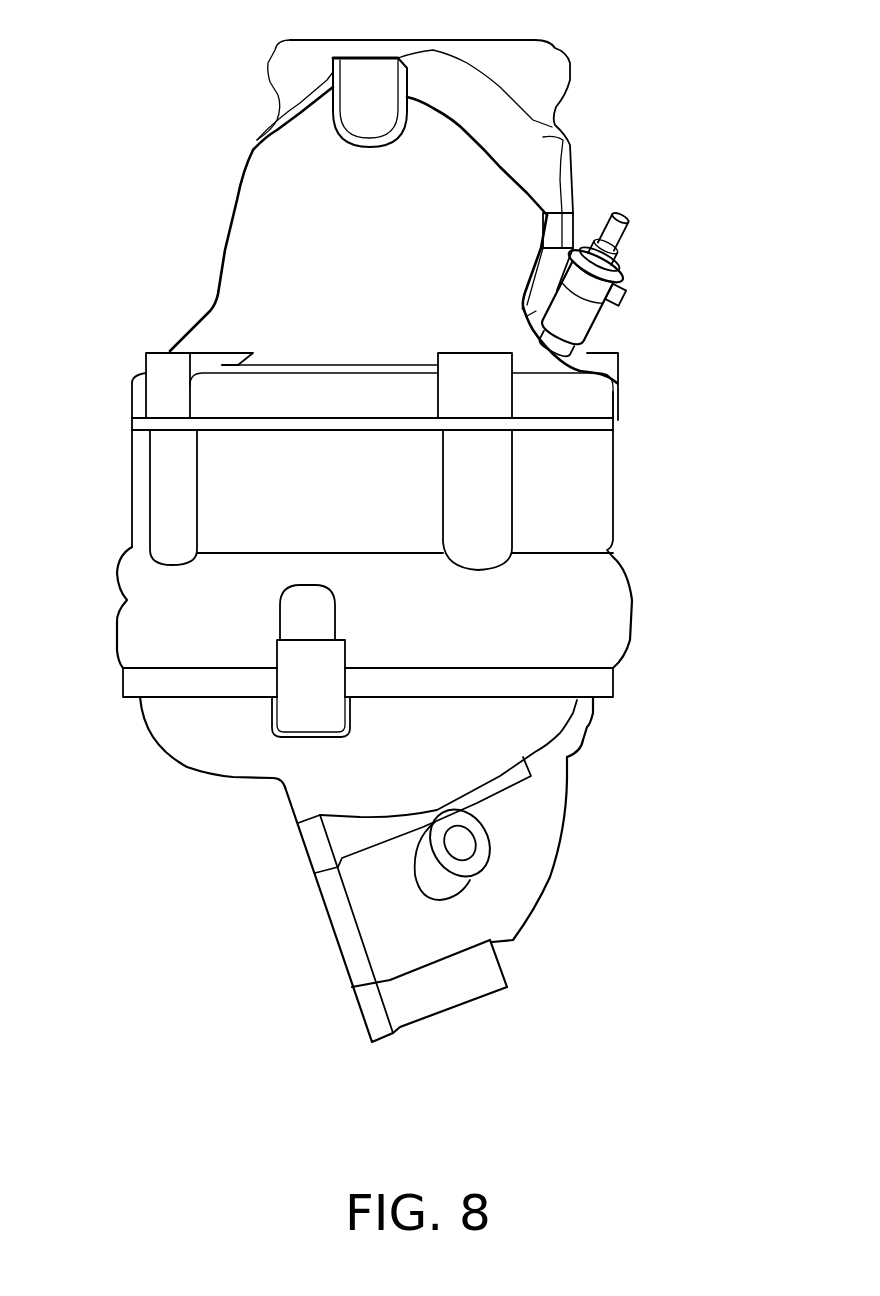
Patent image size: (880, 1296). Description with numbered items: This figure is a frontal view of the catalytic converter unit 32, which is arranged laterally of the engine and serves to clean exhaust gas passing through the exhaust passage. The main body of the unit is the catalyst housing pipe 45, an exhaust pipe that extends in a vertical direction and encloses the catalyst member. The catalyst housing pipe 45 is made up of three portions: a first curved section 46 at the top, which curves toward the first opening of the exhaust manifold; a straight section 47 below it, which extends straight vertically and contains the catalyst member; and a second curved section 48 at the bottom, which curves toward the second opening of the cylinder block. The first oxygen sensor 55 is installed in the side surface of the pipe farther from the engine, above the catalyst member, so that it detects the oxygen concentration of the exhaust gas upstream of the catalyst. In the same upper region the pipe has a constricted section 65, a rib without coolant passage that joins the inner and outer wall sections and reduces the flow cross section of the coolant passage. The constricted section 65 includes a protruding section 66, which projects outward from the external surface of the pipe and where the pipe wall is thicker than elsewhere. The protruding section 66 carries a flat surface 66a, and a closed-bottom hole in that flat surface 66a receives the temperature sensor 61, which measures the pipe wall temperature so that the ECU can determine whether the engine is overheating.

The catalytic converter unit 32 is at (147, 137).
The catalyst housing pipe 45 is at (260, 307).
The first curved section 46 is at (303, 167).
The straight section 47 is at (178, 613).
The second curved section 48 is at (533, 838).
The first oxygen sensor 55 is at (580, 318).
The temperature sensor 61 is at (620, 291).
The constricted section 65 is at (600, 318).
The protruding section 66 is at (555, 262).
The flat surface 66a is at (578, 229).